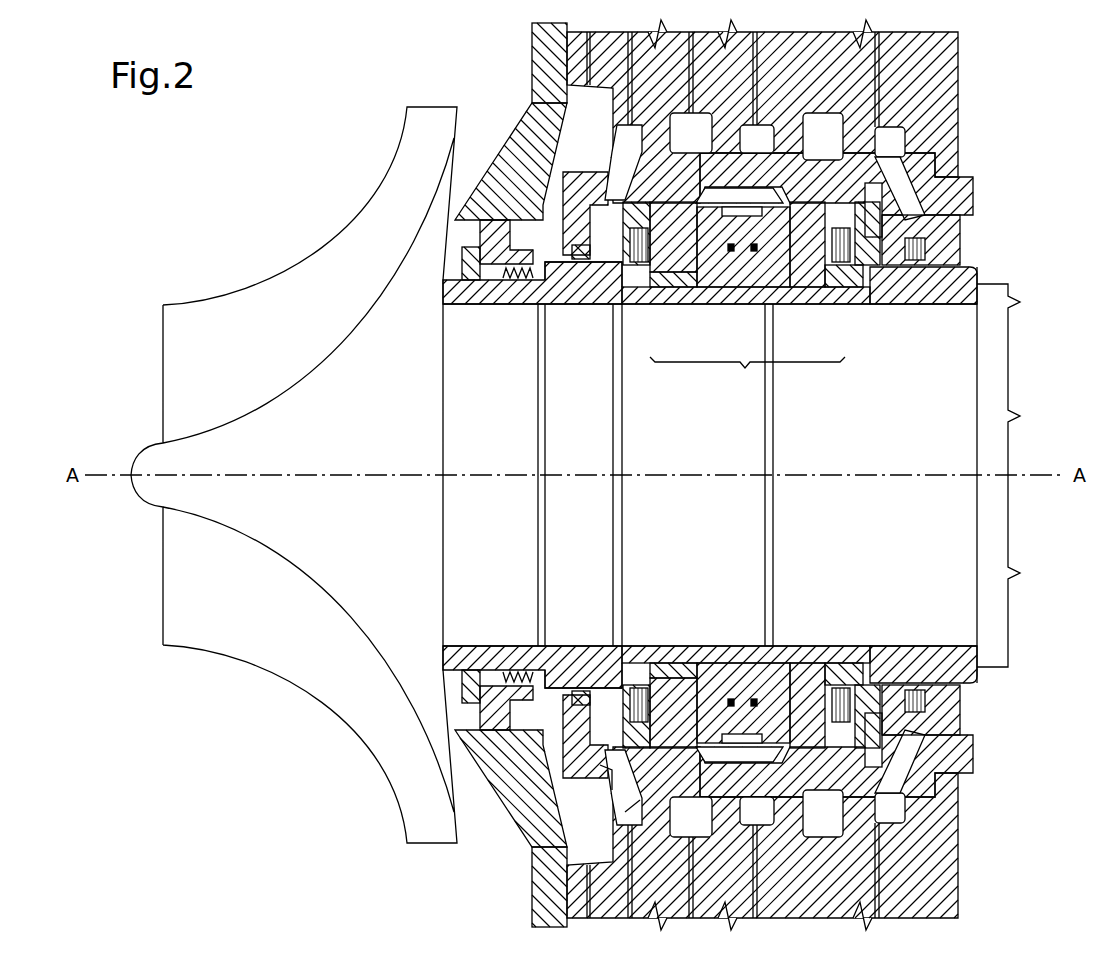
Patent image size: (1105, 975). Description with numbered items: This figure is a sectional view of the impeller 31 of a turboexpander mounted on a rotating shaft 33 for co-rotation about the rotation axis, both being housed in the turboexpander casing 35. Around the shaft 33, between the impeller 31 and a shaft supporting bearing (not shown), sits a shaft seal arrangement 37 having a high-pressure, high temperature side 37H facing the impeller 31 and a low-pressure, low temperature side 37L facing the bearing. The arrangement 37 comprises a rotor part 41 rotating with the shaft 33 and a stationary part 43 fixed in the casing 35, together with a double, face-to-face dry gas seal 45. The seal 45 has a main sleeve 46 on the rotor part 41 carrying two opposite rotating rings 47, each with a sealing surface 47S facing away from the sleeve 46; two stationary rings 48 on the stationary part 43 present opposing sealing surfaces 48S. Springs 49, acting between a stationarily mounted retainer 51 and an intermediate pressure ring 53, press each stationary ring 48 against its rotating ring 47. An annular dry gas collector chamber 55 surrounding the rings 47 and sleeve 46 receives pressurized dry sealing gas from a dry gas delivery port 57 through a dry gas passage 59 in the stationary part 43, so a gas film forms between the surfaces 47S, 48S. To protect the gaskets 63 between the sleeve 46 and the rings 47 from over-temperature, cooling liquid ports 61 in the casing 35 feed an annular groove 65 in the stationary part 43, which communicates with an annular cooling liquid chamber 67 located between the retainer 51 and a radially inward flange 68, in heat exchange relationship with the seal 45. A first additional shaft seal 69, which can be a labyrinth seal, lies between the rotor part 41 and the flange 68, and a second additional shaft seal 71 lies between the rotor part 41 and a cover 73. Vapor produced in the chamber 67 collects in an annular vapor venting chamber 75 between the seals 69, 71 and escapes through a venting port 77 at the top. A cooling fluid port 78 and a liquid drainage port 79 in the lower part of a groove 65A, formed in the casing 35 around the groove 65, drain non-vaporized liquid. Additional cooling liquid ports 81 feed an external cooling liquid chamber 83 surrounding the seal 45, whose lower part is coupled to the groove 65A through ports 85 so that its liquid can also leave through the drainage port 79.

The impeller 31 is at (240, 278).
The rotating shaft 33 is at (958, 367).
The turboexpander casing 35 is at (976, 82).
The shaft seal arrangement 37 is at (985, 196).
The high-pressure, high temperature side 37H is at (514, 315).
The low-pressure, low temperature side 37L is at (985, 280).
The rotor part 41 is at (935, 304).
The stationary part 43 is at (938, 140).
The dry gas seal 45 is at (747, 376).
The main sleeve 46 is at (742, 268).
The rotating rings 47 is at (705, 270).
The sealing surface 47S is at (690, 700).
The stationary rings 48 is at (672, 266).
The sealing surface 48S is at (688, 797).
The springs 49 is at (636, 266).
The retainer 51 is at (920, 266).
The intermediate pressure ring 53 is at (662, 686).
The annular dry gas collector chamber 55 is at (755, 192).
The dry gas delivery port 57 is at (694, 70).
The dry gas passage 59 is at (690, 153).
The cooling liquid ports 61 is at (632, 92).
The gaskets 63 is at (756, 252).
The annular groove 65 is at (630, 165).
The groove 65A is at (645, 808).
The annular cooling liquid chamber 67 is at (586, 305).
The flange 68 is at (565, 192).
The first additional shaft seal 69 is at (574, 252).
The second additional shaft seal 71 is at (470, 270).
The cover 73 is at (548, 70).
The annular vapor venting chamber 75 is at (480, 238).
The venting port 77 is at (590, 68).
The cooling fluid port 78 is at (608, 772).
The liquid drainage port 79 is at (636, 880).
The additional cooling liquid ports 81 is at (758, 70).
The external cooling liquid chamber 83 is at (760, 135).
The ports 85 is at (758, 822).